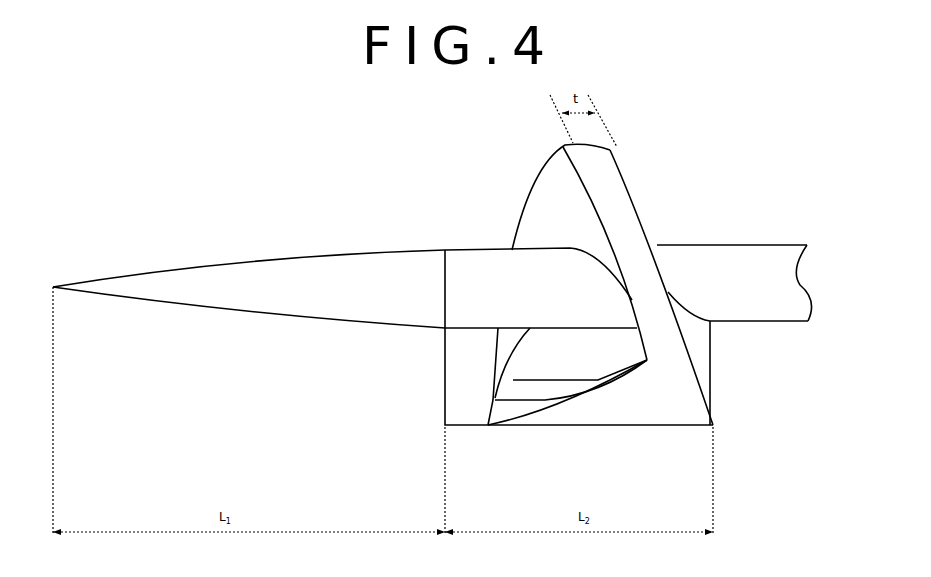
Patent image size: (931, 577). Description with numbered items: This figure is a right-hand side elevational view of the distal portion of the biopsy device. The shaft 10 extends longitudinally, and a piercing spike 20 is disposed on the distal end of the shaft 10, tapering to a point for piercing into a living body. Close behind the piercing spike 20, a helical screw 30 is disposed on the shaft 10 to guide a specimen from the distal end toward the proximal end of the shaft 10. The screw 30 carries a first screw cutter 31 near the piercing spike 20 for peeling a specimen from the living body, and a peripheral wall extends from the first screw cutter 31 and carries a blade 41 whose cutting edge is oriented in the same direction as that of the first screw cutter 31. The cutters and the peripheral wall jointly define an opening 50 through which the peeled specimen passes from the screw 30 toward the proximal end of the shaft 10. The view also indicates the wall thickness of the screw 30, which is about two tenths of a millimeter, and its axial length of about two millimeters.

The shaft 10 is at (747, 321).
The piercing spike 20 is at (228, 313).
The helical screw 30 is at (540, 164).
The first screw cutter 31 is at (443, 387).
The blade 41 is at (555, 425).
The opening 50 is at (538, 355).